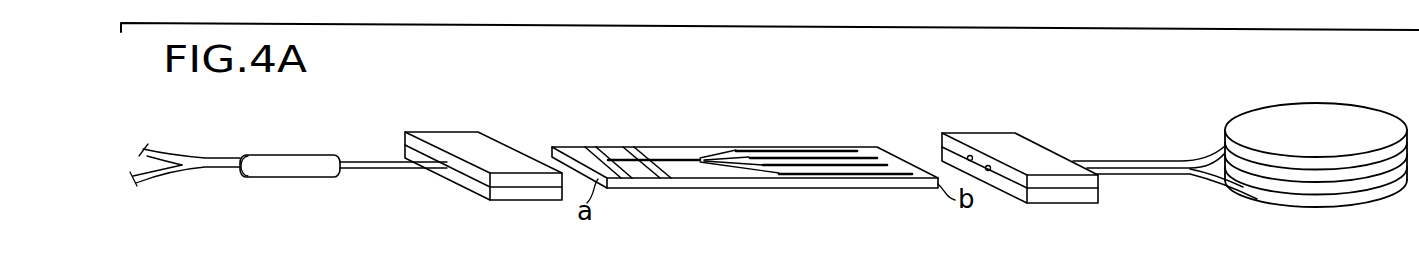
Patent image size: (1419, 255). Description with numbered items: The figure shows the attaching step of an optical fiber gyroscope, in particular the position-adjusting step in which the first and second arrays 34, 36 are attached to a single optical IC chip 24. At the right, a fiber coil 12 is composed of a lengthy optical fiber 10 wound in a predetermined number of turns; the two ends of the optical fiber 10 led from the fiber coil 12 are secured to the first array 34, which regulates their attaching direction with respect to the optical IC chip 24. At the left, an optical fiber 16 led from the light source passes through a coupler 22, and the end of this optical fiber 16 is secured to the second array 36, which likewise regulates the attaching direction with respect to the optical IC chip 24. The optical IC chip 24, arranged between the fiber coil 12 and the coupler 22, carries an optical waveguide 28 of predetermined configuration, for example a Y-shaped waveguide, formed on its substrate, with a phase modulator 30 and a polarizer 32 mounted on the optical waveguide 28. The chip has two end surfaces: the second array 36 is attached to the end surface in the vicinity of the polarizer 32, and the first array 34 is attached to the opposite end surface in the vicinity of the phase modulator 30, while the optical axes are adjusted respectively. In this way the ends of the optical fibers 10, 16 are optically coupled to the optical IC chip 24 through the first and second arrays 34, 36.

The optical fiber 10 is at (1137, 160).
The fiber coil 12 is at (1324, 120).
The optical fiber 16 is at (371, 162).
The coupler 22 is at (286, 157).
The optical IC chip 24 is at (736, 146).
The optical waveguide 28 is at (672, 158).
The phase modulator 30 is at (852, 147).
The polarizer 32 is at (612, 152).
The first array 34 is at (1000, 146).
The second array 36 is at (494, 150).